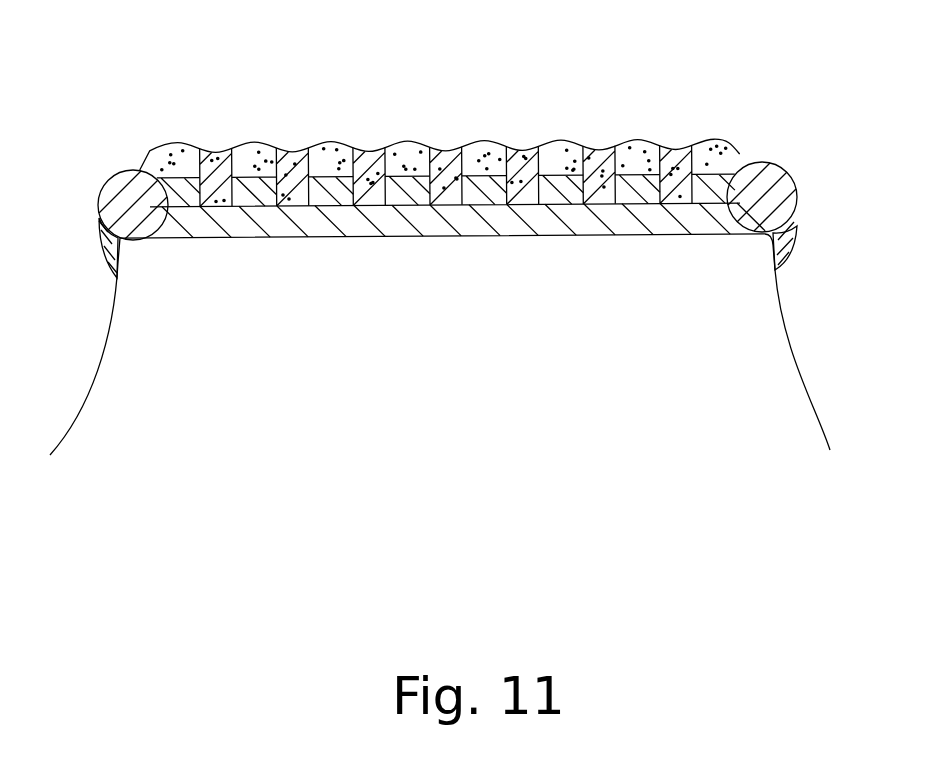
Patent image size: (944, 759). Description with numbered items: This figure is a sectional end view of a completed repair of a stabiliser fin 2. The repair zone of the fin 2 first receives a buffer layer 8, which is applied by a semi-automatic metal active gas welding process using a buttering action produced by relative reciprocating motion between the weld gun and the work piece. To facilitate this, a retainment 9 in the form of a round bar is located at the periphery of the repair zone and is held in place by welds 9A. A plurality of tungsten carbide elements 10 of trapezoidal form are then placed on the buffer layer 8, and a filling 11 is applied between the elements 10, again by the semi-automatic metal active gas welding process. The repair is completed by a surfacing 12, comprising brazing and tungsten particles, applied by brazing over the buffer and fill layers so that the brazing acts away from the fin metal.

The fin 2 is at (442, 380).
The buffer layer 8 is at (442, 225).
The retainment 9 is at (113, 183).
The welds 9A is at (105, 262).
The tungsten carbide elements 10 is at (230, 155).
The filling 11 is at (240, 207).
The surfacing 12 is at (173, 152).